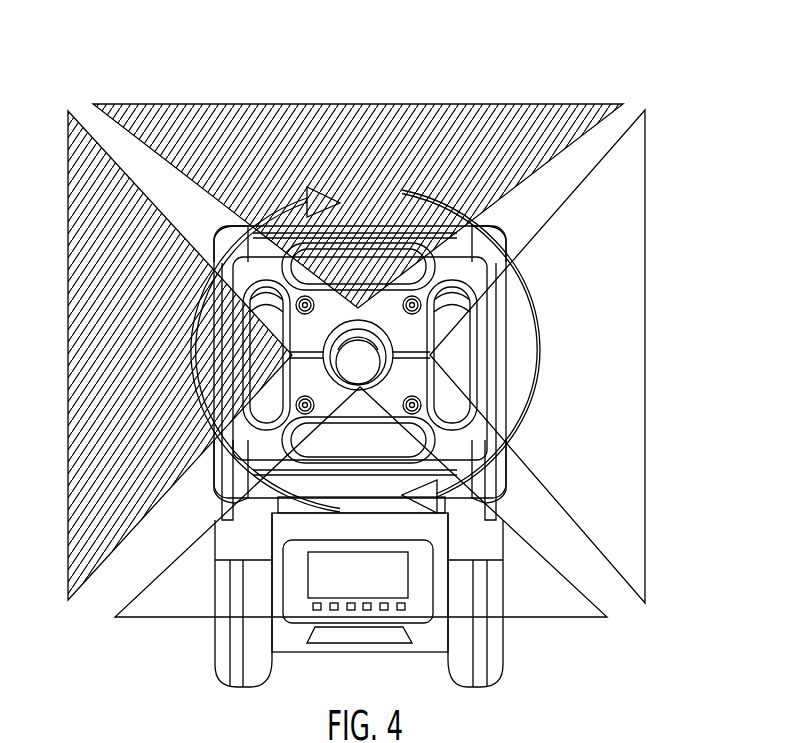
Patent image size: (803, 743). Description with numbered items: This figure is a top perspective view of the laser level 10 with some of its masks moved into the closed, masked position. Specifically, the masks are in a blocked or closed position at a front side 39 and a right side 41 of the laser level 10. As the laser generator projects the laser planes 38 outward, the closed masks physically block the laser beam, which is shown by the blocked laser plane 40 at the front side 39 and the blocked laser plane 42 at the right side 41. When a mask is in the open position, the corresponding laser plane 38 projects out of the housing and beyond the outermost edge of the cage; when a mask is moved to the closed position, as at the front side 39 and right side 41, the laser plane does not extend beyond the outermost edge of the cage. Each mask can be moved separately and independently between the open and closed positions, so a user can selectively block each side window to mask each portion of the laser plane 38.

The laser level 10 is at (615, 40).
The laser planes 38 is at (68, 222).
The front side 39 is at (280, 697).
The blocked laser plane 40 is at (535, 618).
The right side 41 is at (680, 262).
The blocked laser plane 42 is at (645, 345).